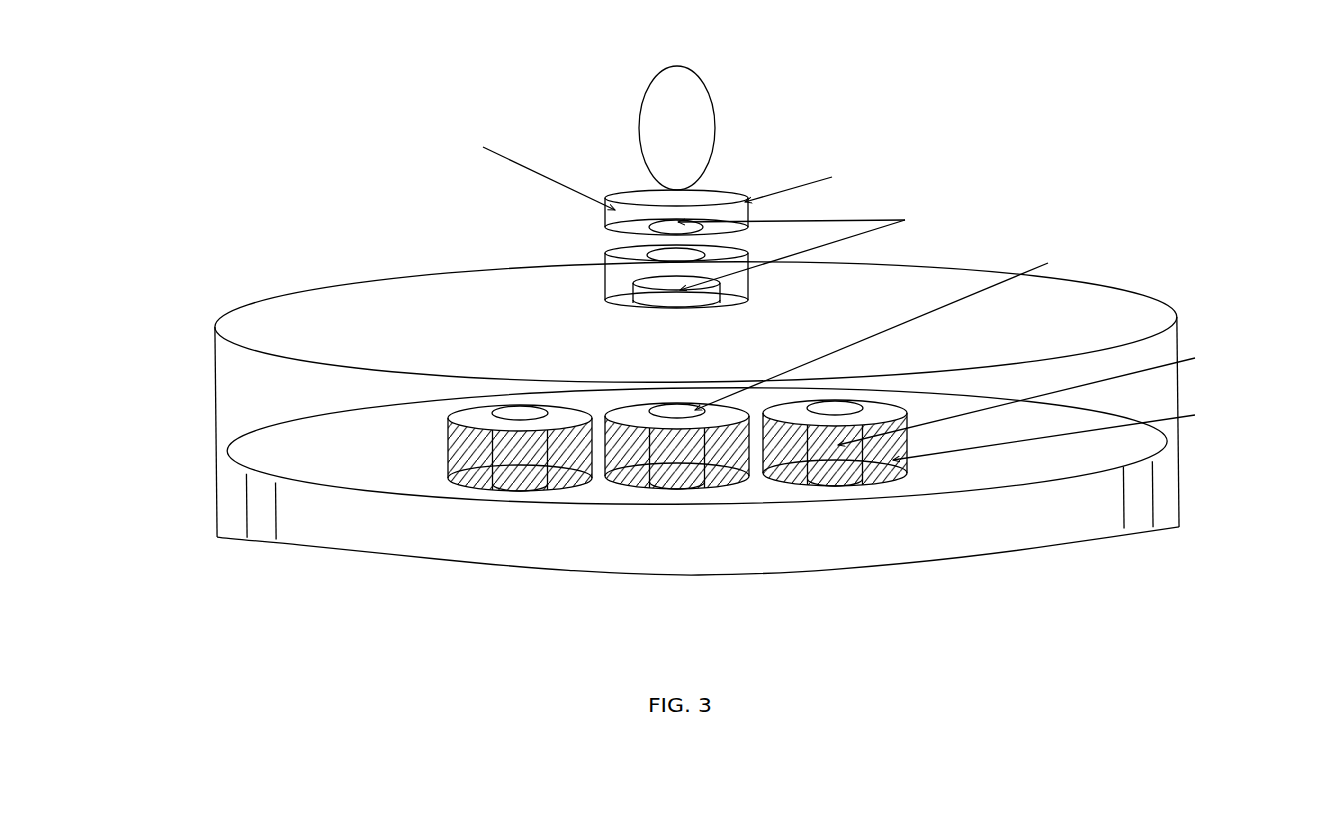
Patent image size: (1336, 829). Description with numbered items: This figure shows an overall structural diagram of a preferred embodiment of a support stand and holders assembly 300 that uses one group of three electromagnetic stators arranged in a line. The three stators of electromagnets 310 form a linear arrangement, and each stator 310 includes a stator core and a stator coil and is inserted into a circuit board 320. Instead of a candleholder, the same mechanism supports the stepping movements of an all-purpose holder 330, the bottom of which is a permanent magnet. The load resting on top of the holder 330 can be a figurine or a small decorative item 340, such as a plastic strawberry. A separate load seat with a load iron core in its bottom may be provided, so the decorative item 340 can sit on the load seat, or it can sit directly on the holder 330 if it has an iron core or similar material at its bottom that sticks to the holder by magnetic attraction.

The linear motor assembly 300 is at (673, 354).
The stator of electromagnet 310 is at (802, 488).
The circuit board 320 is at (302, 448).
The all-purpose holder 330 is at (614, 283).
The small decorative item 340 is at (643, 148).